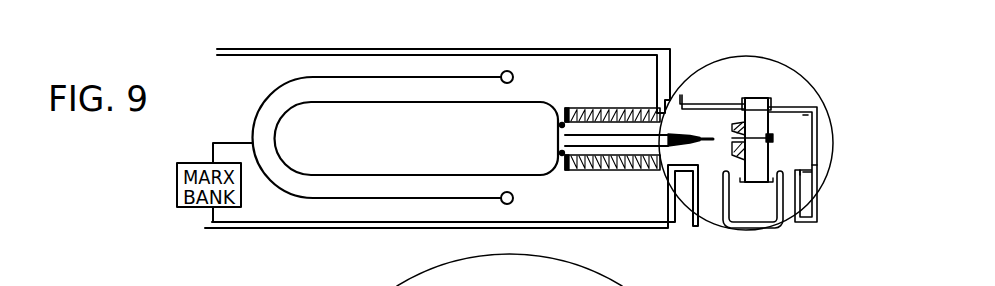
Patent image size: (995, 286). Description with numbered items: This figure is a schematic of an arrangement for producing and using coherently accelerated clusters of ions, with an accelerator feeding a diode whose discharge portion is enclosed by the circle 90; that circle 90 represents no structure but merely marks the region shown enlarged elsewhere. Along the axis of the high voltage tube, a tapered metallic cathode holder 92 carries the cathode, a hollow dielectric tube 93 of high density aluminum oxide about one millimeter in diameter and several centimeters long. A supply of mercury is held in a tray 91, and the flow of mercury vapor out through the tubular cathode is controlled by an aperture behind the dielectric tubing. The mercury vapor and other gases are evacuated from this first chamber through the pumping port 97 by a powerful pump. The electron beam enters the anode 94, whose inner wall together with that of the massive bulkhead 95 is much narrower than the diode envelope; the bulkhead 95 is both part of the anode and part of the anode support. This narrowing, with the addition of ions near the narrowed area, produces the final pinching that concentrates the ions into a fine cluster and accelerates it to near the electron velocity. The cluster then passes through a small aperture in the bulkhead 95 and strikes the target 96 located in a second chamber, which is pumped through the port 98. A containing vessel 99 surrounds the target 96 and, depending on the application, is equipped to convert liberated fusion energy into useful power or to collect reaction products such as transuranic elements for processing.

The circle 90 is at (735, 226).
The tray 91 is at (662, 114).
The cathode holder 92 is at (683, 136).
The dielectric tubular cathode 93 is at (699, 136).
The anode 94 is at (736, 122).
The bulkhead 95 is at (762, 99).
The target 96 is at (770, 136).
The pumping port 97 is at (712, 205).
The port 98 is at (818, 172).
The containing vessel 99 is at (828, 172).